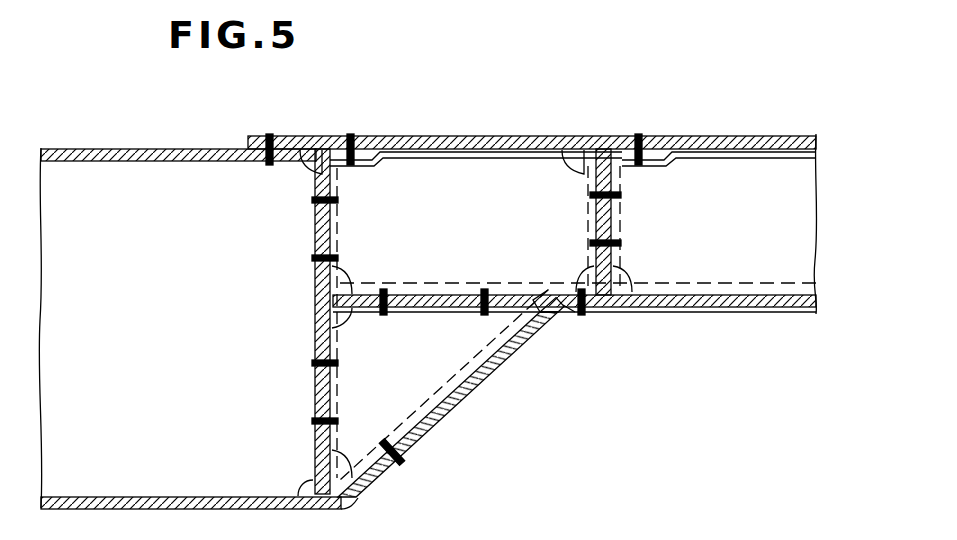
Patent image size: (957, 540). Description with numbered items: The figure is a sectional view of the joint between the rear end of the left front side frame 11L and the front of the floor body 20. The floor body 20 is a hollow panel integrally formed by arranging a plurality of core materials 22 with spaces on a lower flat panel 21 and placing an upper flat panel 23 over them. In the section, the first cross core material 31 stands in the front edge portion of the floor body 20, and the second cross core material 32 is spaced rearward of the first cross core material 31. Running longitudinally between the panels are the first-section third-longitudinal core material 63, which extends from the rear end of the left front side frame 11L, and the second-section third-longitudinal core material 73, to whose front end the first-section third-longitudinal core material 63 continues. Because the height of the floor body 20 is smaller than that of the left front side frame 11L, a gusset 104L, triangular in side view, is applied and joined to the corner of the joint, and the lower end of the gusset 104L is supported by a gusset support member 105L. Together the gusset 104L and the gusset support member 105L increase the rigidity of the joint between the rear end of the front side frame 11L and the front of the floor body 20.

The left front side frame 11L is at (80, 186).
The first-section third-longitudinal core material 63 is at (434, 175).
The second-section third-longitudinal core material 73 is at (695, 182).
The upper flat panel 23 is at (786, 140).
The first cross core material 31 is at (316, 230).
The second cross core material 32 is at (596, 215).
The floor body 20 is at (670, 312).
The lower flat panel 21 is at (718, 302).
The core material 22 is at (763, 258).
The gusset 104L is at (454, 344).
The gusset support member 105L is at (452, 420).